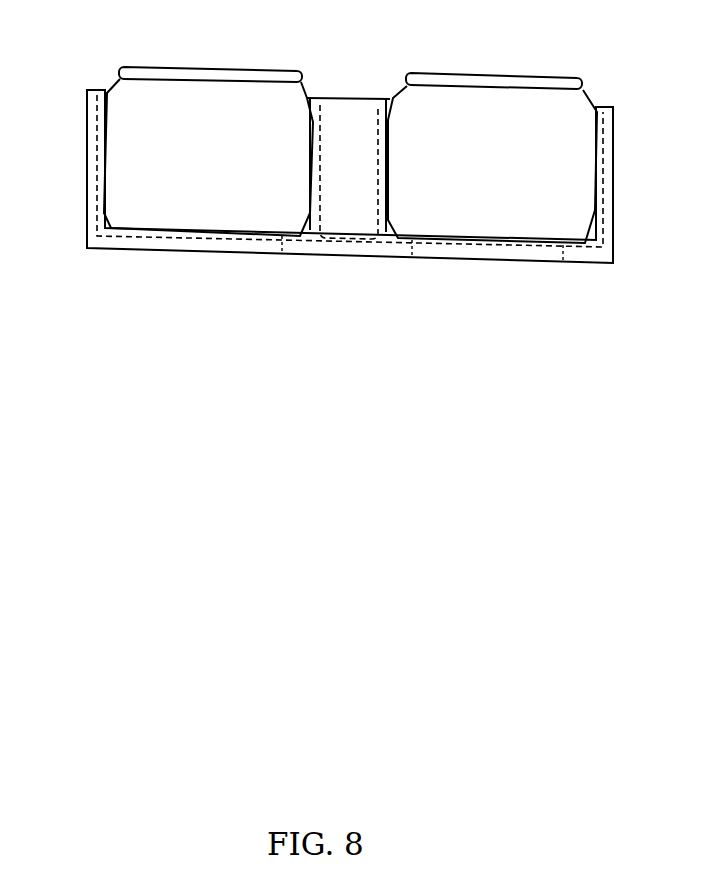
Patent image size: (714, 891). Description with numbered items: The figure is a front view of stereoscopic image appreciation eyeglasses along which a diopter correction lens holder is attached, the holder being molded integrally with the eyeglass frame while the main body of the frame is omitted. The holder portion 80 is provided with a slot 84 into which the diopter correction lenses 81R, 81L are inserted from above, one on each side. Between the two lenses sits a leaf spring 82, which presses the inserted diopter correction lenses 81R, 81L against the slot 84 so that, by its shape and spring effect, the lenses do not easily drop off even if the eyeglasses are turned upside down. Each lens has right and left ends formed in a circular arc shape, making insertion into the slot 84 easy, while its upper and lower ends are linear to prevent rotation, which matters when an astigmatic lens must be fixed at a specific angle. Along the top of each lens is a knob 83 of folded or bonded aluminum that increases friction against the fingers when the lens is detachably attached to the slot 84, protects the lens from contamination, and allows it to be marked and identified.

The holder portion 80 is at (88, 84).
The diopter correction lens 81R is at (305, 83).
The diopter correction lens 81L is at (590, 92).
The leaf spring 82 is at (325, 127).
The knob 83 is at (198, 65).
The slot 84 is at (95, 152).